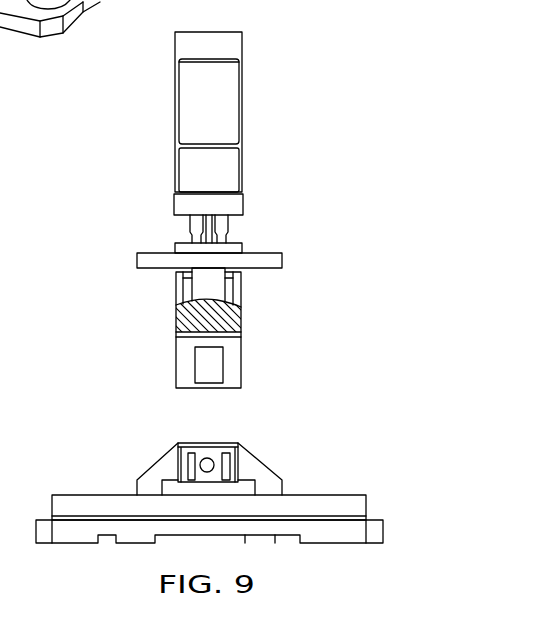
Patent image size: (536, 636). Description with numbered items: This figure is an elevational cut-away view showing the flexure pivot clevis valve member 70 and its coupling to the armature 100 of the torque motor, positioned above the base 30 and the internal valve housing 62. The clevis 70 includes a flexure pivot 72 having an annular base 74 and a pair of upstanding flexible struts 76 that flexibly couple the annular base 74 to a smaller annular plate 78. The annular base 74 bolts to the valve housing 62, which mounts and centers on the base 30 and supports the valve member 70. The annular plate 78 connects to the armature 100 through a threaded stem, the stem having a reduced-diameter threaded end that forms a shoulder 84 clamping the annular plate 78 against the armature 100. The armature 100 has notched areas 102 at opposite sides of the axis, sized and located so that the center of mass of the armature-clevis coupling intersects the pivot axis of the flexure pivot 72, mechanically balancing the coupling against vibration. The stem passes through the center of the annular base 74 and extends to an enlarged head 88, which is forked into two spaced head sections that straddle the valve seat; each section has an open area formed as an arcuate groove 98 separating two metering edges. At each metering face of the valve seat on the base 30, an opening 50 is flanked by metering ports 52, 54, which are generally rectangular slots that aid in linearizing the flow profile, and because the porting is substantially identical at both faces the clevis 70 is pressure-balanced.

The armature 100 is at (210, 31).
The notched areas 102 is at (226, 100).
The annular plate 78 is at (232, 206).
The shoulder 84 is at (190, 224).
The flexible struts 76 is at (203, 241).
The annular base 74 is at (270, 253).
The flexure pivot 72 is at (209, 248).
The valve member 70 is at (229, 294).
The enlarged head 88 is at (240, 342).
The arcuate grooves 98 is at (210, 367).
The internal valve housing 62 is at (237, 450).
The metering port 52 is at (190, 462).
The metering port 54 is at (224, 462).
The opening 50 is at (207, 458).
The base 30 is at (348, 520).